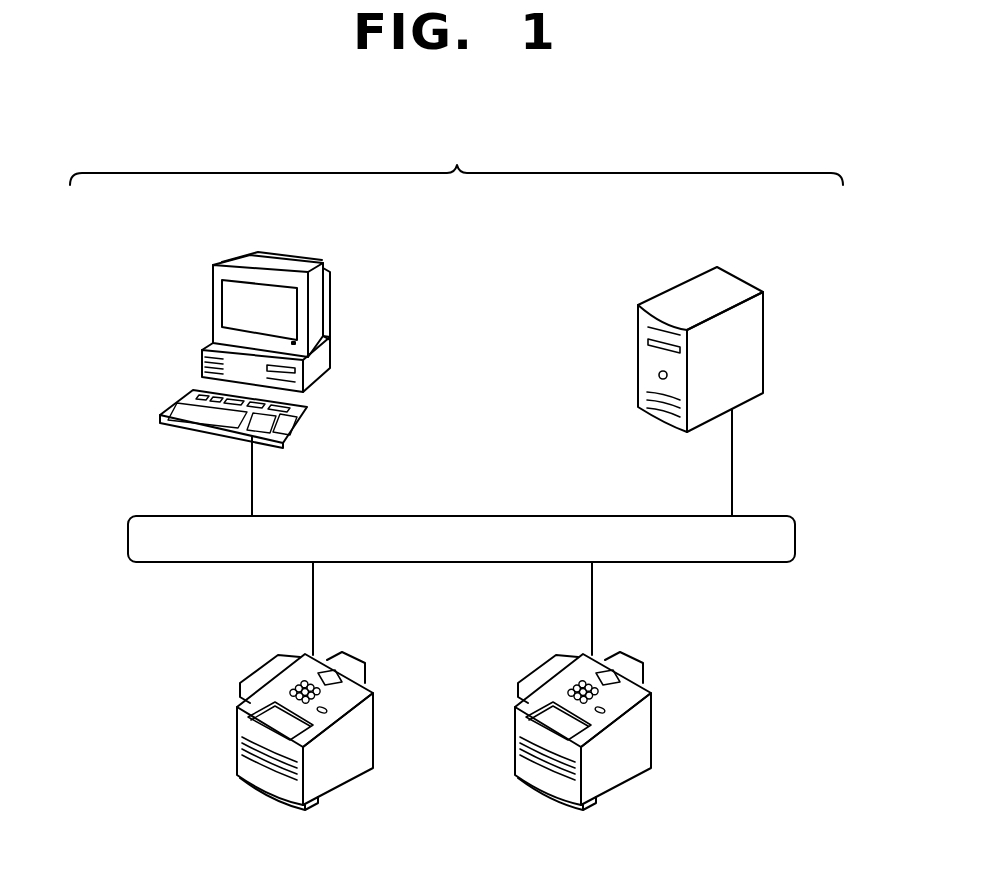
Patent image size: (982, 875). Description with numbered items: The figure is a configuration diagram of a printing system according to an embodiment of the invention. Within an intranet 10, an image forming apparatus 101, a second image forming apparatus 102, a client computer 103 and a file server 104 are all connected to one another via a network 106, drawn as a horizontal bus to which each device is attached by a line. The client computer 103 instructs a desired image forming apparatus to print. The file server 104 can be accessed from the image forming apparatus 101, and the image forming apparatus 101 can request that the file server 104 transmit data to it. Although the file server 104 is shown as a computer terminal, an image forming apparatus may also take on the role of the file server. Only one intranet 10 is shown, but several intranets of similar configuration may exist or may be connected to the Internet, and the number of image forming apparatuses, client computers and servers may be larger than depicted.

The intranet 10 is at (456, 155).
The image forming apparatus 101 is at (345, 780).
The image forming apparatus 102 is at (623, 780).
The client computer 103 is at (275, 253).
The file server 104 is at (731, 283).
The network 106 is at (752, 549).